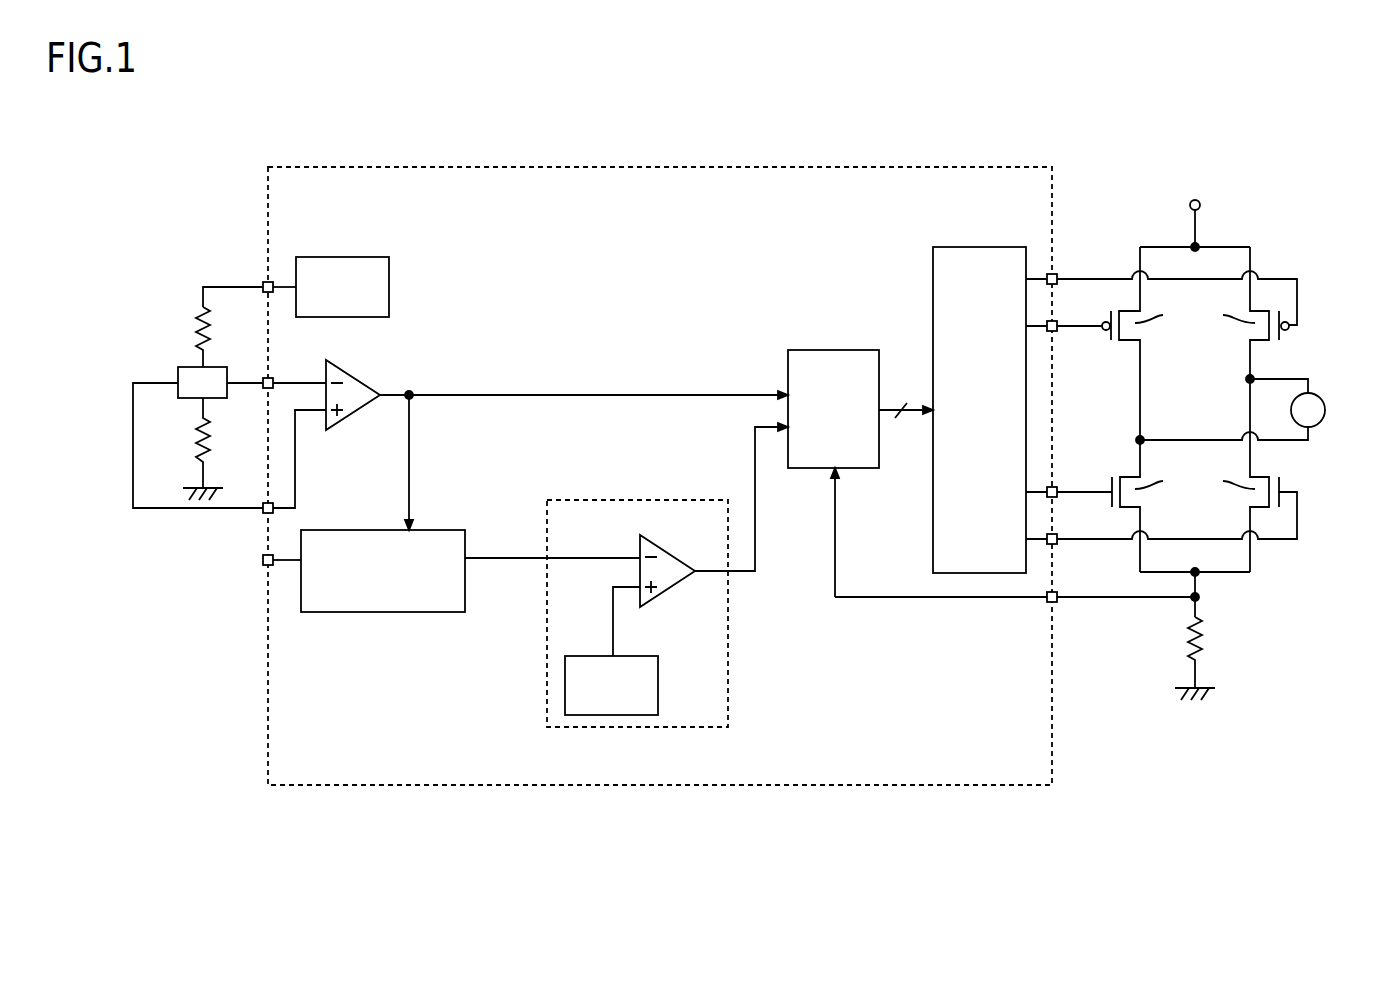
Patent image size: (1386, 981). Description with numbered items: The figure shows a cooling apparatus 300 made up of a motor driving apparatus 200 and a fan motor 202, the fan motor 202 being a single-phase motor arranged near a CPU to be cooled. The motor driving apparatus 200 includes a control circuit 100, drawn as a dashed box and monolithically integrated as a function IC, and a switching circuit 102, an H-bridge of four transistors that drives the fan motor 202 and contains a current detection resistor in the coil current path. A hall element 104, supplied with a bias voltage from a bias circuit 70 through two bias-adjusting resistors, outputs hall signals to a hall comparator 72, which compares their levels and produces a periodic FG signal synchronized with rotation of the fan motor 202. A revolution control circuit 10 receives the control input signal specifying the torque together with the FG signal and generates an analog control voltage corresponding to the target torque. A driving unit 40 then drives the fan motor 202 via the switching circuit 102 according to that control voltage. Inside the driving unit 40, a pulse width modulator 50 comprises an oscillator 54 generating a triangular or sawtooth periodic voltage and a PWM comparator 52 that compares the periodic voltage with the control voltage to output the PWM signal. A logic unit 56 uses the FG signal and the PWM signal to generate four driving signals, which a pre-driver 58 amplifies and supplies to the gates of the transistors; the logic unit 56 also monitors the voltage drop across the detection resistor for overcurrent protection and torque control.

The revolution control circuit 10 is at (425, 530).
The driving unit 40 is at (1015, 735).
The pulse width modulator 50 is at (680, 500).
The PWM comparator 52 is at (668, 552).
The oscillator 54 is at (625, 656).
The logic unit 56 is at (848, 350).
The pre-driver 58 is at (995, 247).
The bias circuit 70 is at (355, 257).
The hall comparator 72 is at (348, 370).
The control circuit 100 is at (1052, 740).
The switching circuit 102 is at (1113, 707).
The hall element 104 is at (217, 364).
The motor driving apparatus 200 is at (1287, 802).
The fan motor 202 is at (1320, 396).
The cooling apparatus 300 is at (570, 877).